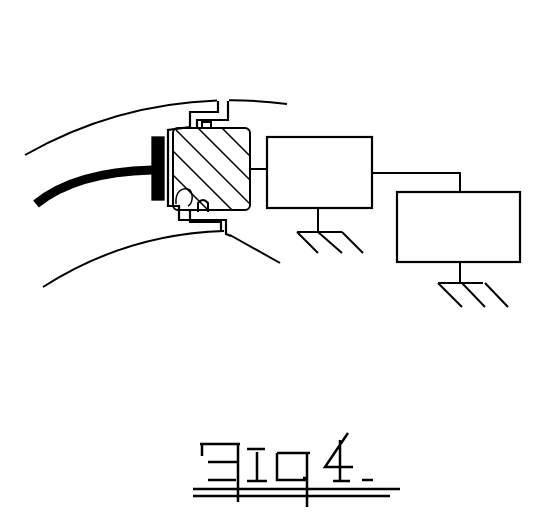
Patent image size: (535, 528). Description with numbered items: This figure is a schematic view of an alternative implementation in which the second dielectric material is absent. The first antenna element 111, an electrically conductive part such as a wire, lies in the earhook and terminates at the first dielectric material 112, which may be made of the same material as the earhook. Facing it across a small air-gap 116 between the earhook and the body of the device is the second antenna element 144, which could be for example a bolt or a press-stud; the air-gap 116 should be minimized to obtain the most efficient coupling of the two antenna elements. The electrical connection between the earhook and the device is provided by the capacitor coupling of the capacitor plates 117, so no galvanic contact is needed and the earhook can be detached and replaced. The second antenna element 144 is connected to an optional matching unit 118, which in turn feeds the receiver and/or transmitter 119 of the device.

The first antenna element 111 is at (100, 171).
The first dielectric material 112 is at (162, 132).
The air-gap 116 is at (222, 98).
The capacitor plates 117 is at (176, 213).
The second antenna element 144 is at (203, 213).
The matching unit 118 is at (319, 195).
The receiver and/or transmitter 119 is at (458, 249).